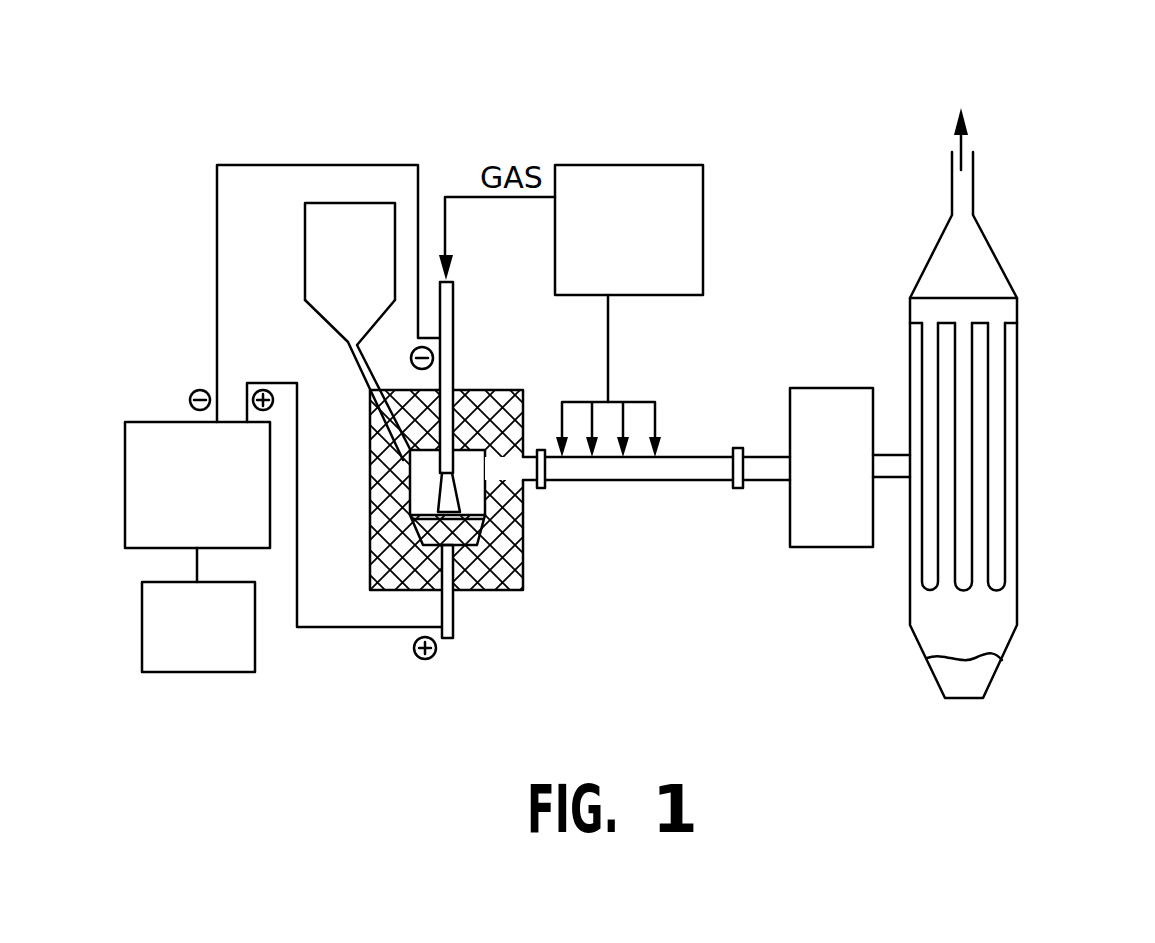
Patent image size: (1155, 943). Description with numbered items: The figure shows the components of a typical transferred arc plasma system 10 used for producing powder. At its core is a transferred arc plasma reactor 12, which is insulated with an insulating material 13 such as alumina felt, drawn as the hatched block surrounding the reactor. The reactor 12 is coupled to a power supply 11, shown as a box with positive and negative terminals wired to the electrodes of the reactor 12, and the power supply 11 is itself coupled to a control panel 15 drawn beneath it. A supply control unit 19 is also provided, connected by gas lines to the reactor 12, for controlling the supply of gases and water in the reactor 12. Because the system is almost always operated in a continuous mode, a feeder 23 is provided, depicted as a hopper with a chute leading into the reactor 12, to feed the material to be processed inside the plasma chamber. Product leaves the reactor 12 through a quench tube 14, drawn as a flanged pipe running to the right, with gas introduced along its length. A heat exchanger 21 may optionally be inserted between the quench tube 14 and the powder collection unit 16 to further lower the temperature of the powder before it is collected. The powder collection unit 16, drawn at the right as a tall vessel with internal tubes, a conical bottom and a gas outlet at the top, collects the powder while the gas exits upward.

The plasma system 10 is at (668, 666).
The power supply 11 is at (173, 423).
The transferred arc plasma reactor 12 is at (523, 580).
The insulating material 13 is at (523, 518).
The quench tube 14 is at (723, 481).
The control panel 15 is at (247, 655).
The powder collection unit 16 is at (1017, 348).
The supply control unit 19 is at (697, 193).
The heat exchanger 21 is at (803, 392).
The feeder 23 is at (310, 247).